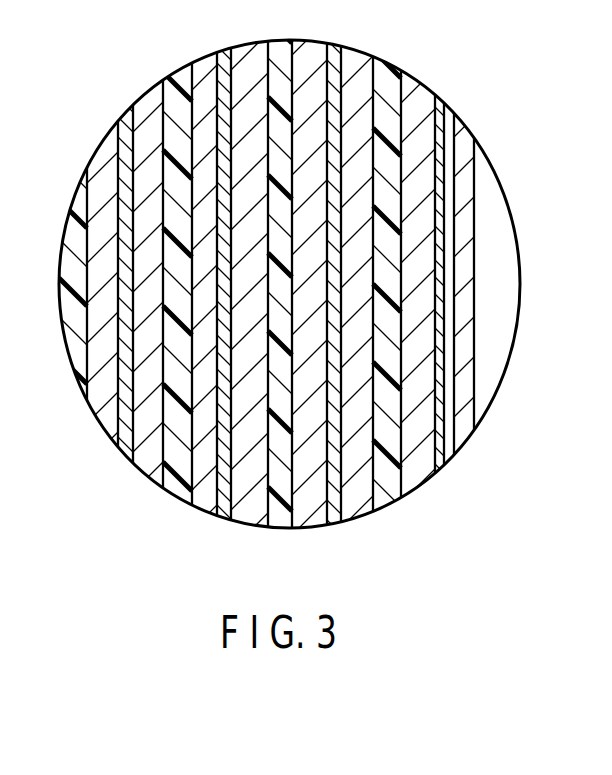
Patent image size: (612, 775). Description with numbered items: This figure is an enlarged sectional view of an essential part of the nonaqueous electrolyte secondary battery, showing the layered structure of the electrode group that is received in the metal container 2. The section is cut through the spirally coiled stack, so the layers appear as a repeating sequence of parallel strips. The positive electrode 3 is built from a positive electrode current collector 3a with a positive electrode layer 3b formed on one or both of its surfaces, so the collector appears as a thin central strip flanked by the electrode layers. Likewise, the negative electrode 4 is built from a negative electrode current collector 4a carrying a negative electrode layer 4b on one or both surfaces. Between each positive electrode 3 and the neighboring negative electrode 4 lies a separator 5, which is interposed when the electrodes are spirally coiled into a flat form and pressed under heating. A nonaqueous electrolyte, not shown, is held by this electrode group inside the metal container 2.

The metal container 2 is at (462, 433).
The positive electrode 3 is at (328, 295).
The positive electrode current collector 3a is at (252, 503).
The positive electrode layer 3b is at (226, 517).
The negative electrode 4 is at (235, 295).
The negative electrode current collector 4a is at (123, 440).
The negative electrode layer 4b is at (100, 405).
The separator 5 is at (176, 78).